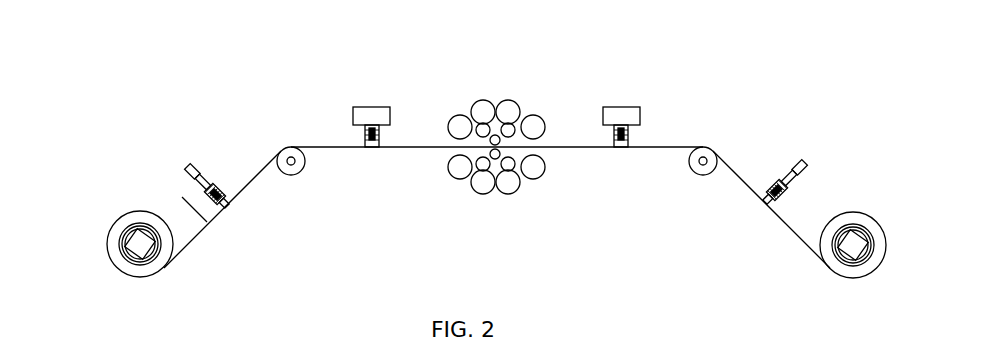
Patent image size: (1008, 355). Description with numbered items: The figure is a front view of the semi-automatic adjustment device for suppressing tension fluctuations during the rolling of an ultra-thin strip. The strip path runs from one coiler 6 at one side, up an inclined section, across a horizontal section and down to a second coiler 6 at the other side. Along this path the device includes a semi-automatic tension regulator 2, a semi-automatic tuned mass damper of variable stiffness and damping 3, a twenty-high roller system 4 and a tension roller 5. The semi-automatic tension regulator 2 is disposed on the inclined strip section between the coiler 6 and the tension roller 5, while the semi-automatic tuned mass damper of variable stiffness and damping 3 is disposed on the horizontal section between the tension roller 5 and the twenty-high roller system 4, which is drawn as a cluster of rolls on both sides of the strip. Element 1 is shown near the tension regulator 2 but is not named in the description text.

The scraper blade 1 is at (165, 173).
The semi-automatic tension regulator 2 is at (185, 163).
The semi-automatic tuned mass damper of variable stiffness and damping 3 is at (372, 113).
The twenty-high roller system 4 is at (508, 113).
The tension roller 5 is at (292, 145).
The coiler 6 is at (122, 203).